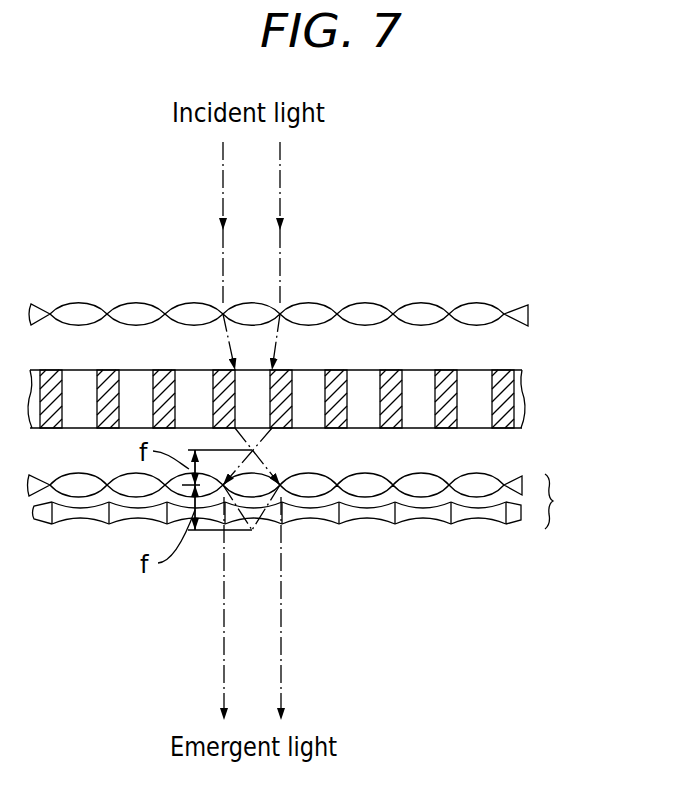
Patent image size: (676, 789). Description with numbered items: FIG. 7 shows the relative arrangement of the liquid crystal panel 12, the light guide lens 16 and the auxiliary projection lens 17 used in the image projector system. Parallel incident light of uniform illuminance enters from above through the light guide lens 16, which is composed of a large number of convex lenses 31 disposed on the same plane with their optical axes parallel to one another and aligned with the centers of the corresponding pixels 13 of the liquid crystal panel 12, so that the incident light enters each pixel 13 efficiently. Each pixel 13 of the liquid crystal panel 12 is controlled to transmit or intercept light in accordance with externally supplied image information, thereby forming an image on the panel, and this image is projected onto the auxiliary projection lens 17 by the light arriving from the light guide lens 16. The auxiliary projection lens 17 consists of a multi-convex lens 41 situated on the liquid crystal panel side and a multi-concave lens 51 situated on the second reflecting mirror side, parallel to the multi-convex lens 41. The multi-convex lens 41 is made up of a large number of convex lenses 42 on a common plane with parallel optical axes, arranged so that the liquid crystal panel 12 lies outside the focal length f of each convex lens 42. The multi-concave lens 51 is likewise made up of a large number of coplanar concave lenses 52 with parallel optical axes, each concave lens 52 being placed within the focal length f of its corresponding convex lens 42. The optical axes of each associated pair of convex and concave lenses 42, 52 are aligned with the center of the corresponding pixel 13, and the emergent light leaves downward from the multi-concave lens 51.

The liquid crystal panel 12 is at (316, 383).
The pixel 13 is at (413, 372).
The light guide lens 16 is at (297, 265).
The convex lens 31 is at (460, 305).
The auxiliary projection lens 17 is at (323, 584).
The multi-convex lens 41 is at (425, 500).
The convex lens 42 is at (477, 490).
The multi-concave lens 51 is at (380, 528).
The concave lens 52 is at (320, 522).